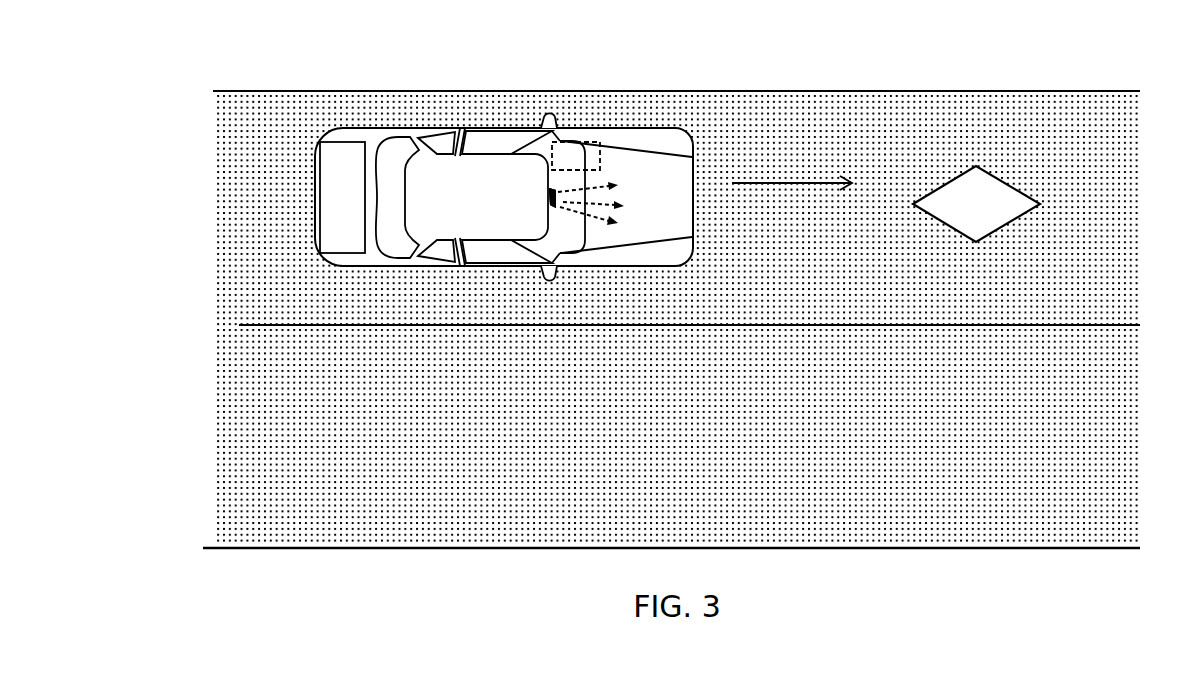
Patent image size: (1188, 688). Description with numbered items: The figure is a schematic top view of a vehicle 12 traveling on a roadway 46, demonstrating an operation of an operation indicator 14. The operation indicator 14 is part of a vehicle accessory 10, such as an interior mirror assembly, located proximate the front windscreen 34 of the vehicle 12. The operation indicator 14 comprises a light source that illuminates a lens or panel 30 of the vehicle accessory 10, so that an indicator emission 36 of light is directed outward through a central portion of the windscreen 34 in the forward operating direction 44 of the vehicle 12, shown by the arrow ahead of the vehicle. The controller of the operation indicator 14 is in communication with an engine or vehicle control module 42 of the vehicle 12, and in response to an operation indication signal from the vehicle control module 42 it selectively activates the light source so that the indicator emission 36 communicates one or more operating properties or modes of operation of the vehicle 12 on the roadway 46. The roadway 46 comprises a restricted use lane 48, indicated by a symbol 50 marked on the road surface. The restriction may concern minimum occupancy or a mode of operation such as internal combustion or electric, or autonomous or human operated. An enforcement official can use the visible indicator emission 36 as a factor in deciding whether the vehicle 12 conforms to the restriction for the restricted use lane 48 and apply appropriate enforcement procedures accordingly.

The vehicle accessory 10 is at (552, 200).
The vehicle 12 is at (476, 206).
The operation indicator 14 is at (552, 198).
The panel 30 is at (556, 207).
The front windscreen 34 is at (553, 237).
The indicator emission 36 is at (600, 170).
The vehicle control module 42 is at (590, 142).
The forward operating direction 44 is at (776, 184).
The roadway 46 is at (240, 110).
The restricted use lane 48 is at (759, 233).
The symbol 50 is at (963, 193).